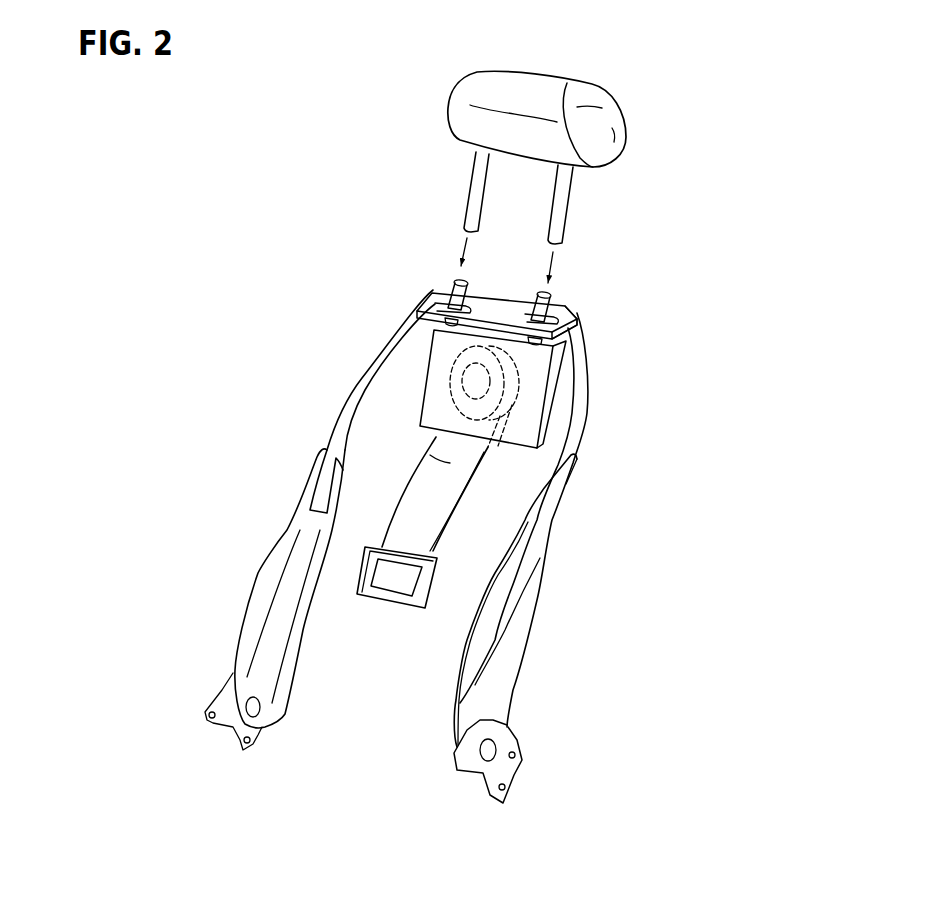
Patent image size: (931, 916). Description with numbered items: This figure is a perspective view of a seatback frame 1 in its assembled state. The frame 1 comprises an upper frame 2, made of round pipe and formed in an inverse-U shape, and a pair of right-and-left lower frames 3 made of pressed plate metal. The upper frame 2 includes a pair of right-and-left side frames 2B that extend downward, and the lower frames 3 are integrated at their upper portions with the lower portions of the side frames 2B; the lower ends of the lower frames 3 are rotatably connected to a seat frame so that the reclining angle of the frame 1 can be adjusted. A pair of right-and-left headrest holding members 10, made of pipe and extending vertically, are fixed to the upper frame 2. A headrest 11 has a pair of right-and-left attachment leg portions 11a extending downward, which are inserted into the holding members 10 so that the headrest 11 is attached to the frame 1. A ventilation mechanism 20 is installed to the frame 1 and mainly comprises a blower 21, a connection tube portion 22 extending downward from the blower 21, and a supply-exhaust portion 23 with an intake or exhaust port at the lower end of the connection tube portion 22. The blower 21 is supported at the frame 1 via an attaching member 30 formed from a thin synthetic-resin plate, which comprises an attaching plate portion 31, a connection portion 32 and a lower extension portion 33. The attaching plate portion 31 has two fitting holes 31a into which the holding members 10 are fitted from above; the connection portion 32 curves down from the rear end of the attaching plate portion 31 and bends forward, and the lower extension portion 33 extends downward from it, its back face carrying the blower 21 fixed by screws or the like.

The frame 1 is at (565, 529).
The upper frame 2 is at (510, 508).
The side frames 2B is at (363, 378).
The lower frames 3 is at (253, 622).
The headrest holding members 10 is at (450, 287).
The headrest 11 is at (538, 95).
The attachment leg portions 11a is at (468, 180).
The ventilation mechanism 20 is at (435, 598).
The blower 21 is at (450, 375).
The connection tube portion 22 is at (458, 514).
The supply-exhaust portion 23 is at (370, 593).
The attaching member 30 is at (567, 389).
The attaching plate portion 31 is at (500, 304).
The fitting holes 31a is at (447, 322).
The connection portion 32 is at (579, 319).
The lower extension portion 33 is at (528, 388).